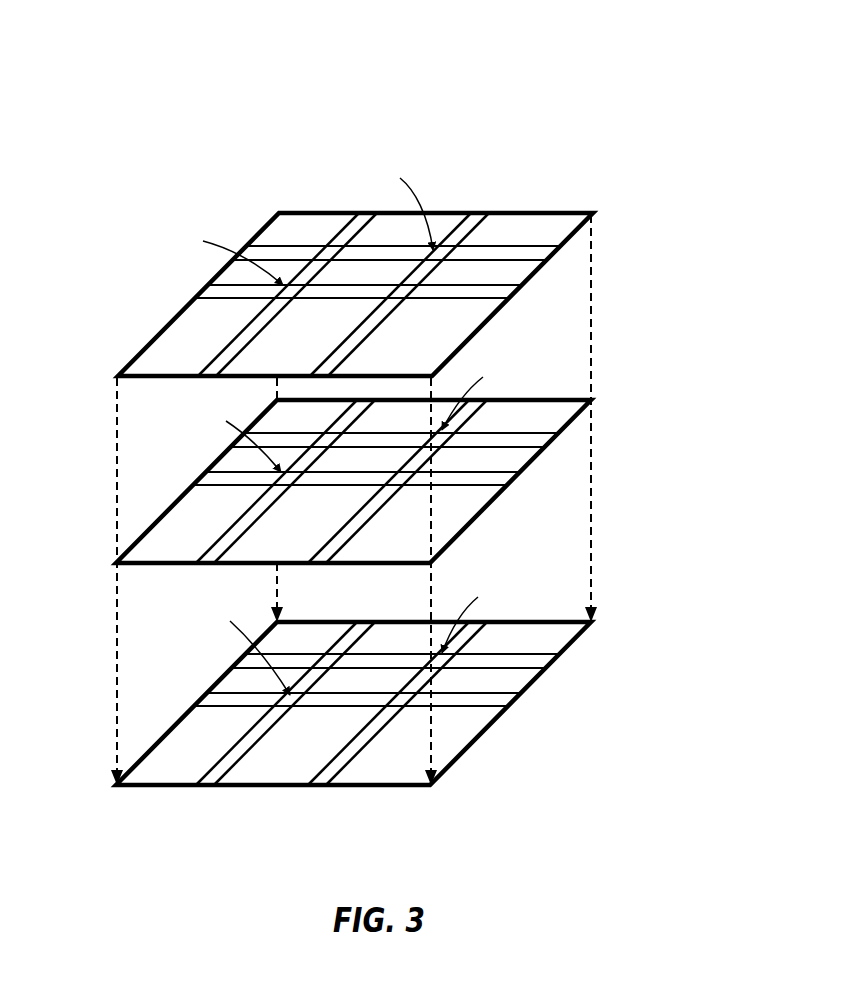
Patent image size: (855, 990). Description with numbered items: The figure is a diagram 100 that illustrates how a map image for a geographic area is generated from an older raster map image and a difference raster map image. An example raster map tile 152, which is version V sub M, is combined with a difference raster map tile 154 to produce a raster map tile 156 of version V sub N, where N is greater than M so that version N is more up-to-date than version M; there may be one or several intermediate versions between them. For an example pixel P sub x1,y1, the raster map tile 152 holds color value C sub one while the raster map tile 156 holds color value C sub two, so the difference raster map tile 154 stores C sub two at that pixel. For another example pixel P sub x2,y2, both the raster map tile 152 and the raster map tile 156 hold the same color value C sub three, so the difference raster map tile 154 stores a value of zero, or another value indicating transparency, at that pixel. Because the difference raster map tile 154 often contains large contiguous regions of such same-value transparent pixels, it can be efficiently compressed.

The diagram 100 is at (106, 40).
The raster map tile 152 is at (140, 355).
The difference raster map tile 154 is at (142, 535).
The raster map tile 156 is at (142, 757).